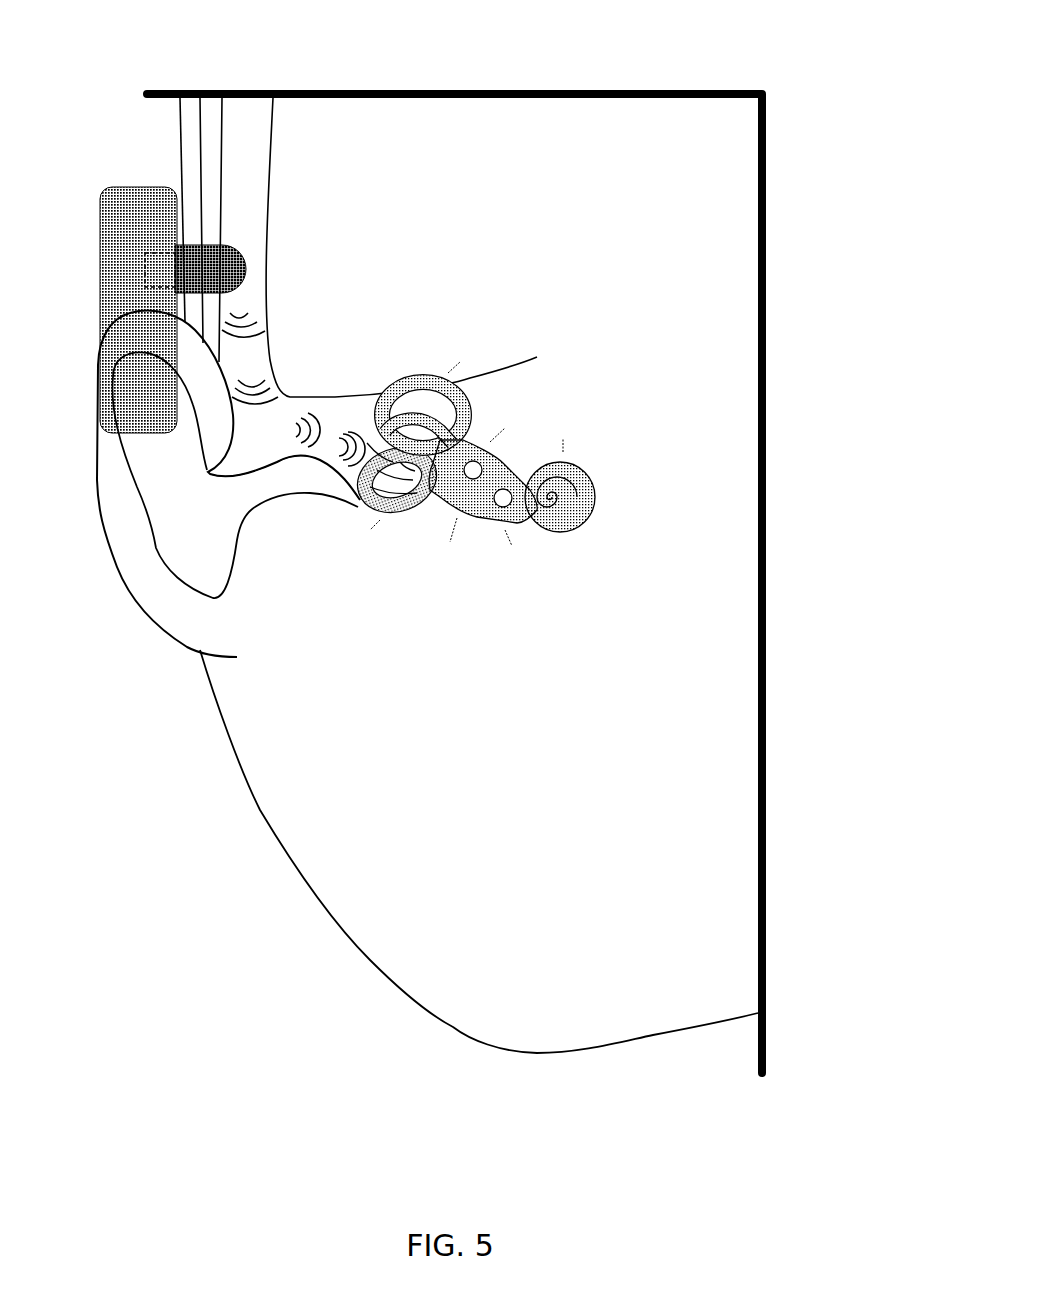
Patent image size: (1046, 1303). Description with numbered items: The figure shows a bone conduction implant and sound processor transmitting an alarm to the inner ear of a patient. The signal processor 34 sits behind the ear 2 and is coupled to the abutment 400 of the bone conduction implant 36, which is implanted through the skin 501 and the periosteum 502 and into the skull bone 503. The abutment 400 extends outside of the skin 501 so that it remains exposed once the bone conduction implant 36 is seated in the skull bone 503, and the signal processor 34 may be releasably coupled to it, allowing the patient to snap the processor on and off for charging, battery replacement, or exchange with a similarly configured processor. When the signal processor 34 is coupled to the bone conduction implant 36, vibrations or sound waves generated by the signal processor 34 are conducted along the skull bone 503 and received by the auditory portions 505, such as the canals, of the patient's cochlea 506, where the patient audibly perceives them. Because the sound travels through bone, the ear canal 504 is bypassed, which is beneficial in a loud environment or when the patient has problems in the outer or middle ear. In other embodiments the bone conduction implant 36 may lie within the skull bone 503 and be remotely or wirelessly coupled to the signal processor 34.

The ear 2 is at (150, 617).
The signal processor 34 is at (108, 203).
The bone conduction implant 36 is at (248, 259).
The abutment 400 is at (145, 255).
The skin 501 is at (188, 107).
The periosteum 502 is at (213, 107).
The skull bone 503 is at (257, 107).
The ear canal 504 is at (313, 490).
The auditory portions 505 is at (358, 432).
The cochlea 506 is at (593, 523).